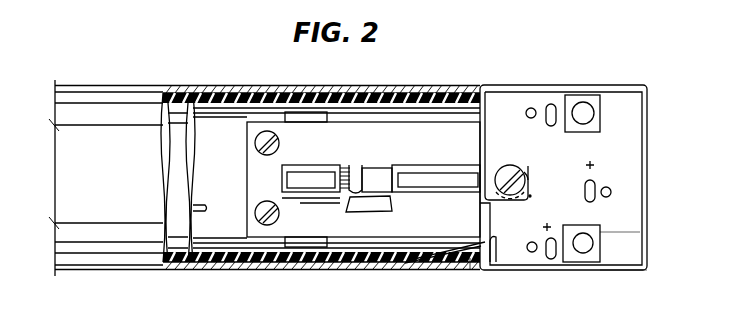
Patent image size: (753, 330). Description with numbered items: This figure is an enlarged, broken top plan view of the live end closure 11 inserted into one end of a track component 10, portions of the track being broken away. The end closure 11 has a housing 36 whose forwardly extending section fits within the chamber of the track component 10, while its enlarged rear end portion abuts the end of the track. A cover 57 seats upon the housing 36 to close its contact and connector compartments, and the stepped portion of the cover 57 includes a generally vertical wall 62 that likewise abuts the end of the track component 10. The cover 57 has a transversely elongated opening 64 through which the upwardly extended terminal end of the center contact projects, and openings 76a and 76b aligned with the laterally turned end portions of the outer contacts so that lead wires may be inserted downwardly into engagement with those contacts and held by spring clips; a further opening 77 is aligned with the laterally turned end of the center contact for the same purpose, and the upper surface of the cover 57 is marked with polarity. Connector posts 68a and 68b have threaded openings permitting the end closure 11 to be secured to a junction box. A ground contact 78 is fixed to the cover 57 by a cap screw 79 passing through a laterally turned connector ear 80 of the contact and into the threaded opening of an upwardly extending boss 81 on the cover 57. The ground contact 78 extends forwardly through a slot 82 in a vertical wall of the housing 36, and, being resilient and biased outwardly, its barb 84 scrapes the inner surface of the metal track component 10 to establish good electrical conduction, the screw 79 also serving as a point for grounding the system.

The track component 10 is at (113, 86).
The live end closure 11 is at (630, 88).
The housing 36 is at (633, 272).
The cover 57 is at (632, 232).
The vertical wall 62 is at (482, 145).
The transversely elongated opening 64 is at (372, 175).
The connector post 68a is at (593, 96).
The connector post 68b is at (590, 258).
The opening 76a is at (549, 104).
The opening 76b is at (550, 258).
The opening 77 is at (597, 183).
The ground contact 78 is at (494, 240).
The cap screw 79 is at (510, 165).
The connector ear 80 is at (528, 176).
The boss 81 is at (530, 196).
The slot 82 is at (470, 268).
The barb 84 is at (395, 262).